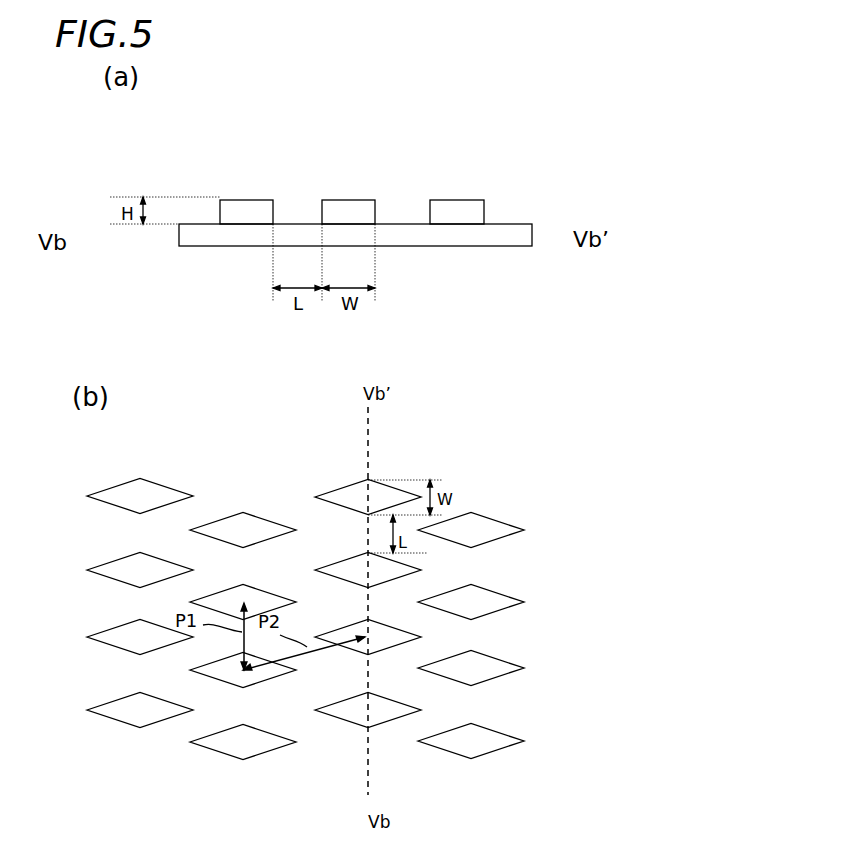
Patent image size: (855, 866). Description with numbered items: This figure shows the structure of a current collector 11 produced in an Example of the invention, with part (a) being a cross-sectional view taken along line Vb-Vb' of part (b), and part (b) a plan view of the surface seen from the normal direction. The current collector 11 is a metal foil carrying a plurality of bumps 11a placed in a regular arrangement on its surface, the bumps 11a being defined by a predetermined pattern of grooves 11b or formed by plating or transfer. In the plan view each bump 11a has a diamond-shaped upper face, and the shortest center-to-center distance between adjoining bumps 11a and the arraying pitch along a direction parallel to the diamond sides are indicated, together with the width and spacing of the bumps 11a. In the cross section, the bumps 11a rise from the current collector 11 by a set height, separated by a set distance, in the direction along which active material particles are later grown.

The current collector 11 is at (373, 411).
The bumps 11a is at (470, 208).
The grooves 11b is at (299, 207).